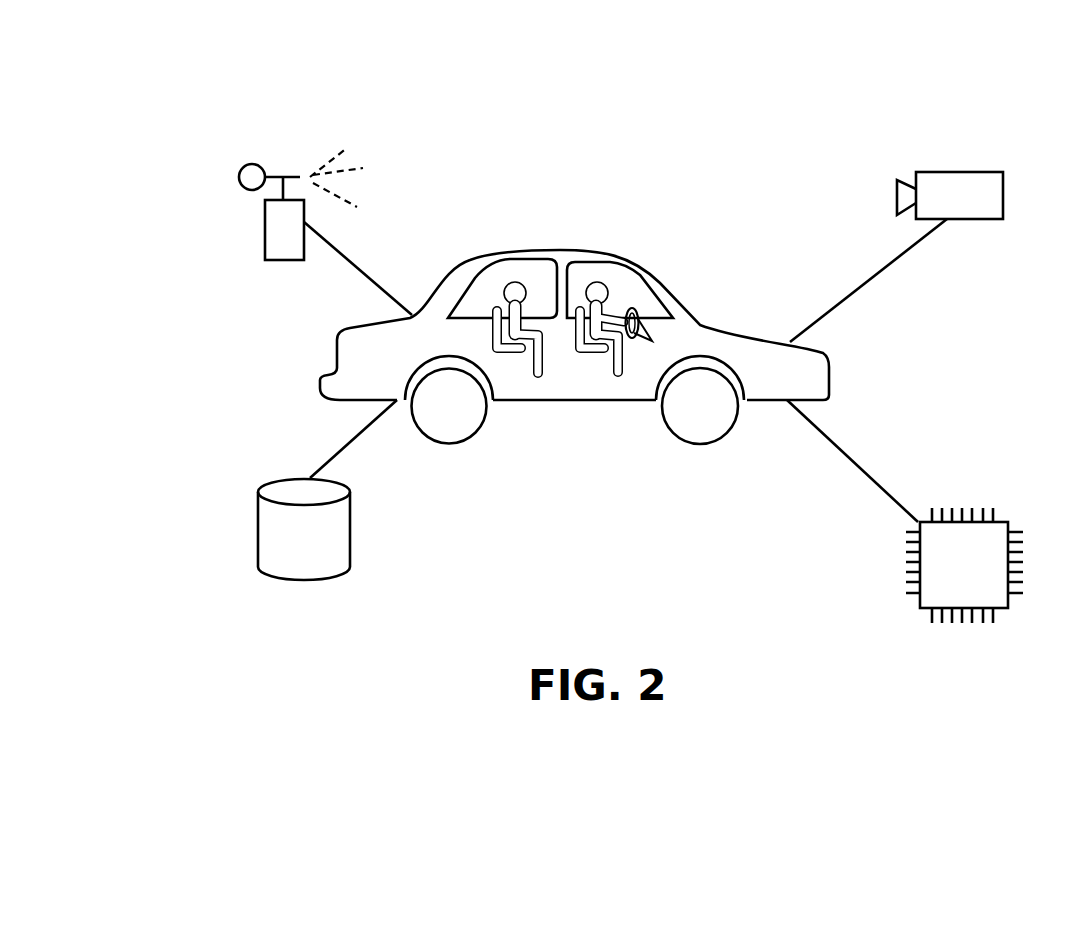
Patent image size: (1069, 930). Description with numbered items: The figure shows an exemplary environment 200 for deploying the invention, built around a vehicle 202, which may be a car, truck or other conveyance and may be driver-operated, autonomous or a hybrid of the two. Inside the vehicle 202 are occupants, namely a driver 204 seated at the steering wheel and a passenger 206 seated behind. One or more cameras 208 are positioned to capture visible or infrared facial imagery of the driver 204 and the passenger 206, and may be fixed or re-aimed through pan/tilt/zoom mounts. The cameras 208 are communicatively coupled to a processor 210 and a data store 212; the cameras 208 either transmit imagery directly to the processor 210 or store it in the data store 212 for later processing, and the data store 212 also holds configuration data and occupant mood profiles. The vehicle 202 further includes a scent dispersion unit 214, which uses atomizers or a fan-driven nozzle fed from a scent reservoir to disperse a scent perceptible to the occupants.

The exemplary environment 200 is at (190, 124).
The vehicle 202 is at (830, 372).
The driver 204 is at (635, 343).
The passenger 206 is at (540, 348).
The camera 208 is at (985, 172).
The processor 210 is at (1003, 520).
The data store 212 is at (352, 537).
The scent dispersion unit 214 is at (265, 231).